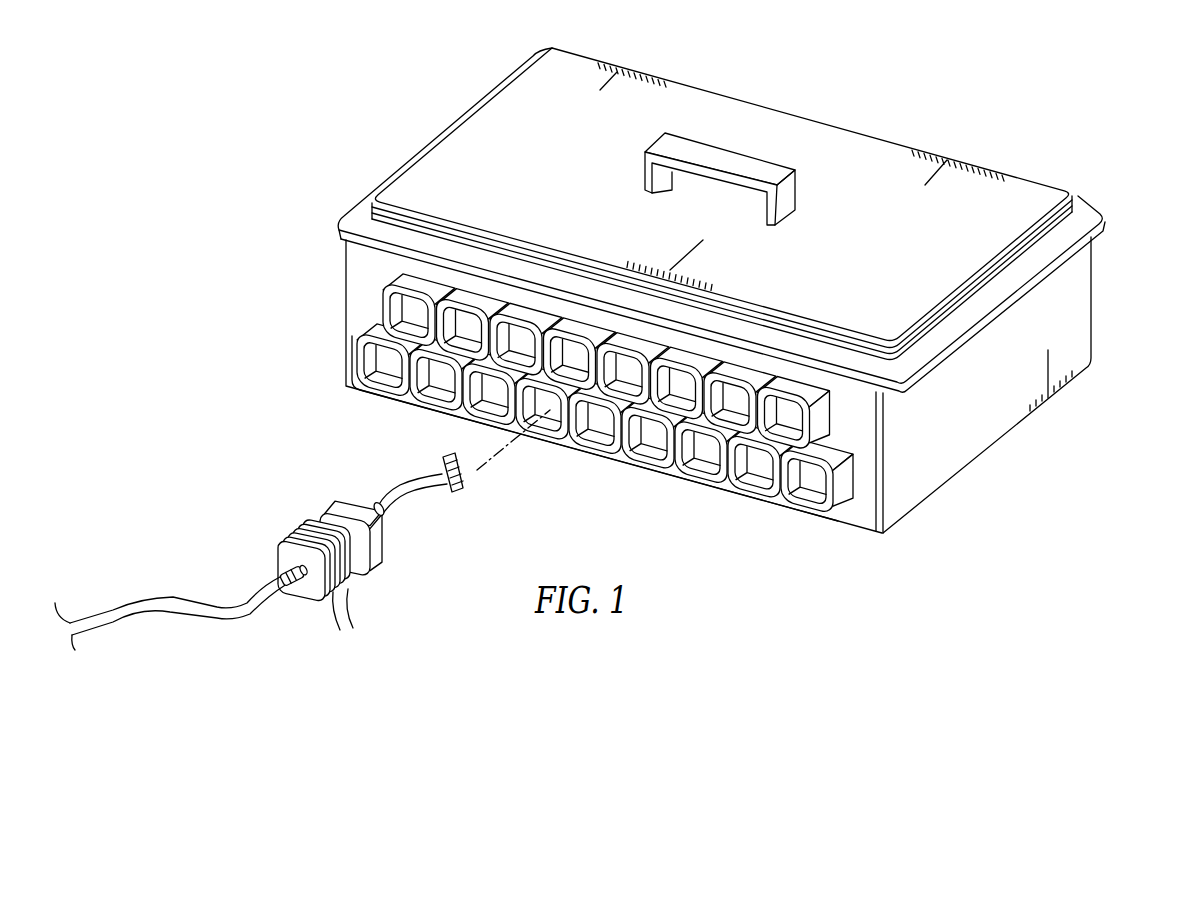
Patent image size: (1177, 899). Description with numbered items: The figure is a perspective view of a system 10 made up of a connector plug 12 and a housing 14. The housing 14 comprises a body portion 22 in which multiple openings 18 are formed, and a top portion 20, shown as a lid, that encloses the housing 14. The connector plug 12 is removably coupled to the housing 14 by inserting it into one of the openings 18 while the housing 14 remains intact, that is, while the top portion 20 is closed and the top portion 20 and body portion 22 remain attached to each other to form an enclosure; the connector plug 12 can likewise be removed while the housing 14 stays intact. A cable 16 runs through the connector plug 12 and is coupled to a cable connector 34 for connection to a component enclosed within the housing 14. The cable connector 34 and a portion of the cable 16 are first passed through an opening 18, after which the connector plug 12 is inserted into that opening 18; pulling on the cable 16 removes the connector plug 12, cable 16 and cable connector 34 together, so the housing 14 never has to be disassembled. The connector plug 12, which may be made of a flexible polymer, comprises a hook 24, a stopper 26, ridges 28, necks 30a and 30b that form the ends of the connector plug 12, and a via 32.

The system 10 is at (720, 330).
The connector plug 12 is at (302, 534).
The housing 14 is at (912, 492).
The cable 16 is at (223, 617).
The openings 18 is at (352, 369).
The top portion 20 is at (862, 152).
The body portion 22 is at (1091, 305).
The hook 24 is at (343, 504).
The stopper 26 is at (363, 582).
The ridges 28 is at (347, 620).
The neck 30a is at (368, 500).
The neck 30b is at (293, 563).
The via 32 is at (282, 582).
The cable connector 34 is at (458, 490).